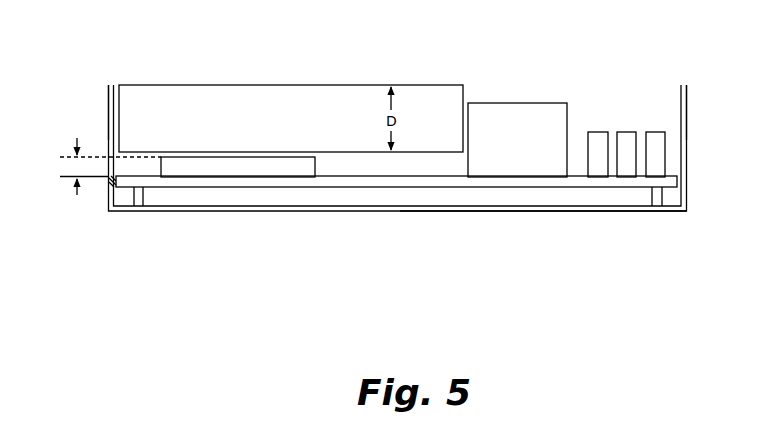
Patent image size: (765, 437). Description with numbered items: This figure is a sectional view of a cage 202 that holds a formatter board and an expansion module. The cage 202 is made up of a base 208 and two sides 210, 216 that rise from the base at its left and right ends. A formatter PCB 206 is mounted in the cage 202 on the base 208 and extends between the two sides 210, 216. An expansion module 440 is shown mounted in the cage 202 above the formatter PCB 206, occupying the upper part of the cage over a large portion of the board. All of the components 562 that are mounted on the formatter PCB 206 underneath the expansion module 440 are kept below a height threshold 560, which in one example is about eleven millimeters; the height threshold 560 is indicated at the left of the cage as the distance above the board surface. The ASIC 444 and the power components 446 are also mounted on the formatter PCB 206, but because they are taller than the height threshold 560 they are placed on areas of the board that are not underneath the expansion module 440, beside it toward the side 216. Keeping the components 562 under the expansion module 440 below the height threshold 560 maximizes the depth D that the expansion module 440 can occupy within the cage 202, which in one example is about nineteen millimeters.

The cage 202 is at (267, 226).
The formatter PCB 206 is at (522, 187).
The base 208 is at (604, 222).
The side 210 is at (108, 108).
The side 216 is at (687, 123).
The expansion module 440 is at (272, 83).
The ASIC 444 is at (517, 140).
The power components 446 is at (652, 130).
The height threshold 560 is at (110, 180).
The components mounted under the expansion module 562 is at (199, 168).